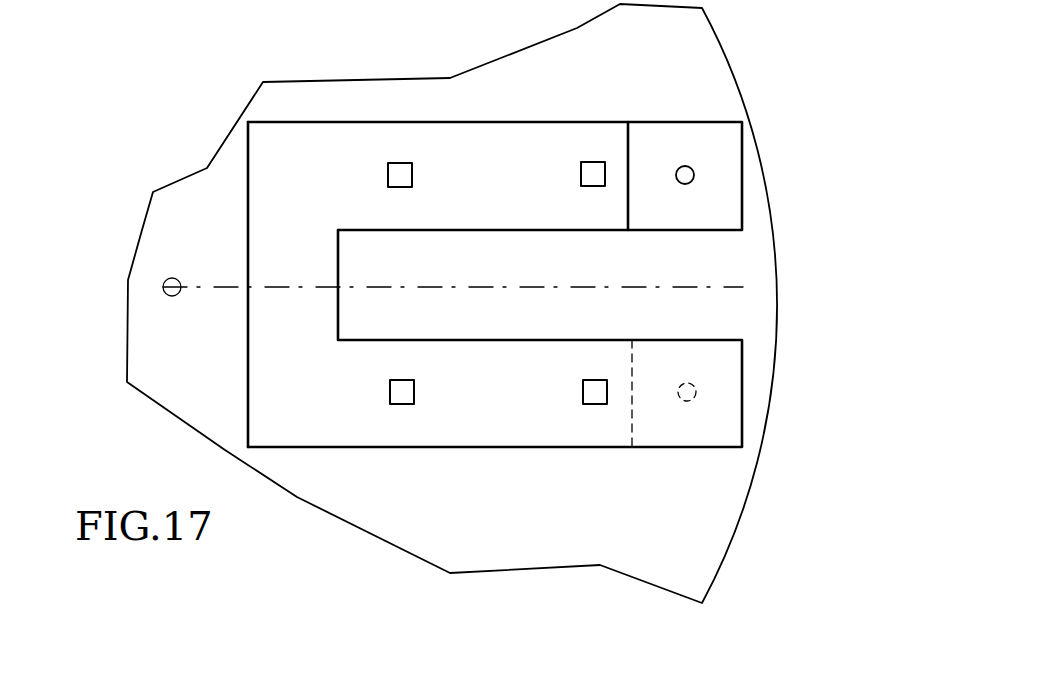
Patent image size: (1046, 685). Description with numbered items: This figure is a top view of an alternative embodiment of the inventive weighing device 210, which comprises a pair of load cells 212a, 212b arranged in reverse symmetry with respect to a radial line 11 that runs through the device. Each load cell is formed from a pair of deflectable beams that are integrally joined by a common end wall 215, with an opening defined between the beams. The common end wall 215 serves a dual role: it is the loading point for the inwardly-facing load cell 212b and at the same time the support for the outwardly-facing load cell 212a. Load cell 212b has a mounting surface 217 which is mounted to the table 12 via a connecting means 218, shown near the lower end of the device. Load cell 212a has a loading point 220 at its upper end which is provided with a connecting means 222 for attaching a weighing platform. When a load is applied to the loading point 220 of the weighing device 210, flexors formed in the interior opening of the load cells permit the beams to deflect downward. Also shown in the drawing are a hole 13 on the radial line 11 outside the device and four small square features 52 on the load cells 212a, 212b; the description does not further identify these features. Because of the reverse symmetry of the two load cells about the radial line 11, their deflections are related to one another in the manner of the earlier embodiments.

The radial line 11 is at (690, 287).
The table 12 is at (745, 90).
The pivot hole 13 is at (168, 278).
The mounting holes 52 is at (590, 165).
The weighing device 210 is at (510, 309).
The load cell 212a is at (359, 120).
The load cell 212b is at (361, 452).
The common end wall 215 is at (243, 208).
The mounting surface 217 is at (700, 450).
The connecting means 218 is at (695, 396).
The loading point 220 is at (728, 198).
The connecting means 222 is at (693, 172).